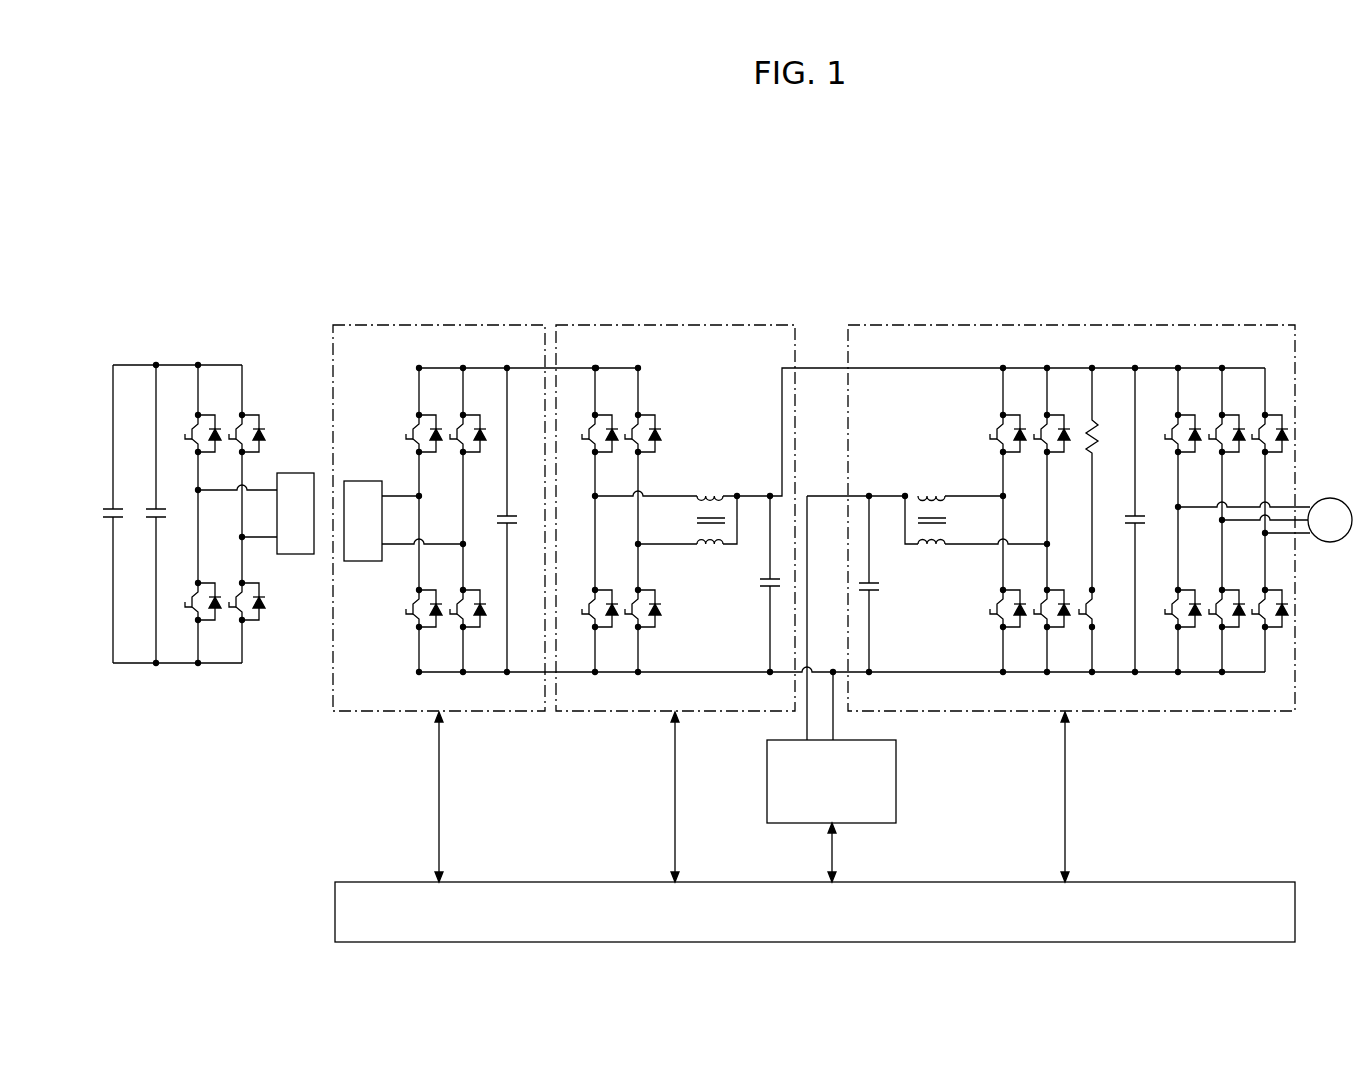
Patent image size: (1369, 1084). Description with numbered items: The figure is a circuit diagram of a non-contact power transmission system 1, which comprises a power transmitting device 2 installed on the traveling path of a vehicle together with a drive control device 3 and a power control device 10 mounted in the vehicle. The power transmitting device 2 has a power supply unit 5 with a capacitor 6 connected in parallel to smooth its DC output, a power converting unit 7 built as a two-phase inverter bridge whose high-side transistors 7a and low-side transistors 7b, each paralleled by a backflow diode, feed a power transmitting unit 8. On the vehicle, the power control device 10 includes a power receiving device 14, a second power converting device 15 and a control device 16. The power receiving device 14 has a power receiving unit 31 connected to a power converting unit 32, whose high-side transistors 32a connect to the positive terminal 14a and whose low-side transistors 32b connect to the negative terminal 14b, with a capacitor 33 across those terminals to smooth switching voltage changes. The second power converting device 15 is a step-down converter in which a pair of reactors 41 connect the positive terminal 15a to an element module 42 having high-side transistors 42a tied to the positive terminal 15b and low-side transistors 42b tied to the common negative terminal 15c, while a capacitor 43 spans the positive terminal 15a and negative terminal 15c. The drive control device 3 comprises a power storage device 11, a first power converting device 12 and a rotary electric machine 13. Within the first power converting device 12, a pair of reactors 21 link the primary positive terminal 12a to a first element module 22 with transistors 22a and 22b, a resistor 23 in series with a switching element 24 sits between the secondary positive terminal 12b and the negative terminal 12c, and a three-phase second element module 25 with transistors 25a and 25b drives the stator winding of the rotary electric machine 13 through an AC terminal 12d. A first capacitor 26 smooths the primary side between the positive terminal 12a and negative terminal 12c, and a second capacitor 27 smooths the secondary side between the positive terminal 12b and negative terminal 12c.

The non-contact power transmission system 1 is at (1318, 215).
The power transmitting device 2 is at (293, 322).
The drive control device 3 is at (1293, 285).
The power supply unit 5 is at (115, 508).
The capacitor 6 is at (158, 508).
The power converting unit 7 is at (236, 362).
The transistor 7a is at (198, 415).
The transistor 7b is at (198, 620).
The power transmitting unit 8 is at (297, 473).
The power control device 10 is at (768, 255).
The power storage device 11 is at (896, 790).
The first power converting device 12 is at (1295, 337).
The positive terminal 12a is at (869, 496).
The positive terminal 12b is at (1135, 368).
The negative terminal 12c is at (872, 672).
The AC terminal 12d is at (1178, 507).
The rotary electric machine 13 is at (1330, 498).
The power receiving device 14 is at (540, 325).
The positive terminal 14a is at (507, 368).
The negative terminal 14b is at (507, 672).
The second power converting device 15 is at (725, 325).
The positive terminal 15a is at (770, 496).
The positive terminal 15b is at (596, 368).
The negative terminal 15c is at (770, 672).
The control device 16 is at (1258, 882).
The pair of reactors 21 is at (945, 544).
The first element module 22 is at (1047, 368).
The transistor 22a is at (1003, 415).
The transistor 22b is at (1003, 627).
The resistor 23 is at (1092, 420).
The switching element 24 is at (1092, 590).
The second element module 25 is at (1228, 368).
The transistor 25a is at (1178, 415).
The transistor 25b is at (1178, 627).
The first capacitor 26 is at (878, 596).
The second capacitor 27 is at (1136, 516).
The power receiving unit 31 is at (363, 481).
The power converting unit 32 is at (432, 368).
The transistor 32a is at (419, 415).
The transistor 32b is at (463, 590).
The capacitor 33 is at (508, 516).
The pair of reactors 41 is at (697, 544).
The element module 42 is at (634, 368).
The transistor 42a is at (595, 415).
The transistor 42b is at (595, 627).
The capacitor 43 is at (770, 579).